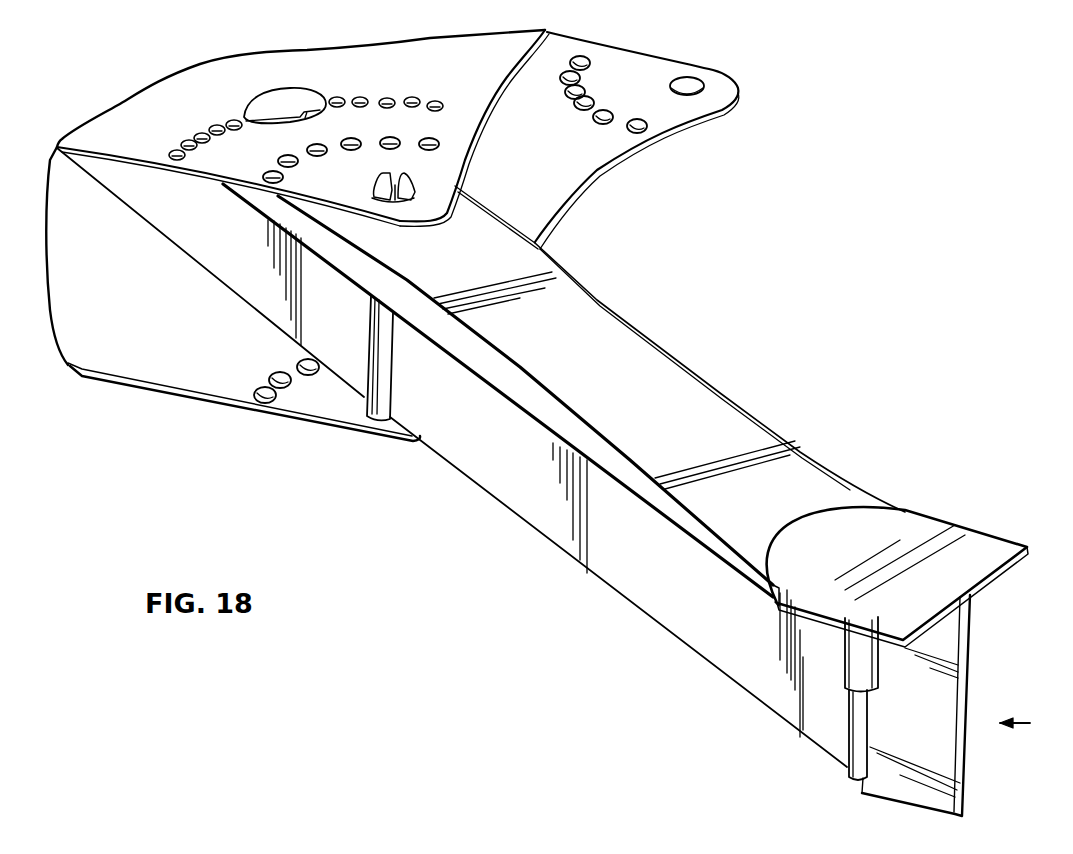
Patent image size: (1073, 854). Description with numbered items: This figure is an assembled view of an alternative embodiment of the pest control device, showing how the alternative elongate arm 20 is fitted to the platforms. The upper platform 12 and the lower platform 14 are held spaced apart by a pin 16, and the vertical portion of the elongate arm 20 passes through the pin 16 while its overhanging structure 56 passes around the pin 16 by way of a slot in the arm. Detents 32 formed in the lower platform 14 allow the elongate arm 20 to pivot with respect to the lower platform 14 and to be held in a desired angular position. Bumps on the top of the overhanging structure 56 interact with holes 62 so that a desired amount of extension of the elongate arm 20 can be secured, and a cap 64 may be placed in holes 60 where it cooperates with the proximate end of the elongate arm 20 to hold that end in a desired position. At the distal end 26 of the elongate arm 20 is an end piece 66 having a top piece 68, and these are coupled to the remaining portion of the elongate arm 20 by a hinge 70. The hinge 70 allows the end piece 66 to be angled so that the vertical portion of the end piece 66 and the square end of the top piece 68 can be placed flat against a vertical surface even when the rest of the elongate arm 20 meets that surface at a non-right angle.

The upper platform 12 is at (110, 139).
The lower platform 14 is at (588, 168).
The pin 16 is at (374, 322).
The elongate arm 20 is at (500, 478).
The distal end 26 is at (1031, 727).
The detents 32 is at (278, 378).
The overhanging structure 56 is at (816, 468).
The holes 60 is at (183, 133).
The holes 62 is at (317, 157).
The cap 64 is at (274, 95).
The end piece 66 is at (957, 630).
The top piece 68 is at (947, 530).
The hinge 70 is at (857, 724).